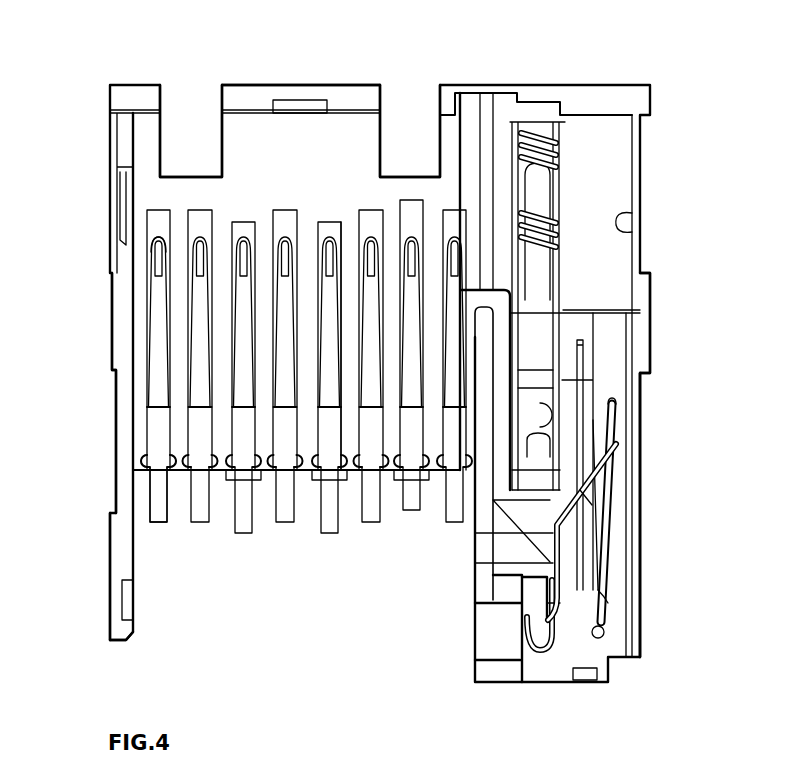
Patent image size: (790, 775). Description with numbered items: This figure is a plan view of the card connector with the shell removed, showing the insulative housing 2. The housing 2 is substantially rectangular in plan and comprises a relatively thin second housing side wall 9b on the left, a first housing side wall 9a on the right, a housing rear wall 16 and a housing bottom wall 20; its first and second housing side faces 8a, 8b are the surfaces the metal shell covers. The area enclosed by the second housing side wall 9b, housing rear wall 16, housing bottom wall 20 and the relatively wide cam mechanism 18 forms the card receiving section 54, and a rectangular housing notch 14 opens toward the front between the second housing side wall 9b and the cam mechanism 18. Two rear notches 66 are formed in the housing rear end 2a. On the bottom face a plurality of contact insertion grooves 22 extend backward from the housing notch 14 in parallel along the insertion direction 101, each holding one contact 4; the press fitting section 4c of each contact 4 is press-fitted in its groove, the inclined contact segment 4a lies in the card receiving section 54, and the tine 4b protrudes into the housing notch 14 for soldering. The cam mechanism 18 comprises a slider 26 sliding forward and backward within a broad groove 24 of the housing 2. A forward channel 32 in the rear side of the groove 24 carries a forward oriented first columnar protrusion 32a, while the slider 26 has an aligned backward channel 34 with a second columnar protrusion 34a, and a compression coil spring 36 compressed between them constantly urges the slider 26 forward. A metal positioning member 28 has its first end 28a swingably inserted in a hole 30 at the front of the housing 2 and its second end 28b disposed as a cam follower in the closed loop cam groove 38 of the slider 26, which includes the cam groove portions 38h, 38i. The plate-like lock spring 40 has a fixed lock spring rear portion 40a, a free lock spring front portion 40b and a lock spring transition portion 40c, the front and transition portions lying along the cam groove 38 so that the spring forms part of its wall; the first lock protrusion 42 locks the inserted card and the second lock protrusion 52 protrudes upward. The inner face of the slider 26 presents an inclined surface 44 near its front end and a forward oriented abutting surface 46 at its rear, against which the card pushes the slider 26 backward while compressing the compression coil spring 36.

The housing 2 is at (355, 135).
The housing rear end 2a is at (237, 85).
The contact 4 is at (146, 388).
The contact segment 4a is at (160, 290).
The tine 4b is at (156, 514).
The press fitting section 4c is at (150, 437).
The first housing side face 8a is at (643, 407).
The second housing side face 8b is at (113, 468).
The first housing side wall 9a is at (633, 490).
The second housing side wall 9b is at (120, 357).
The housing notch 14 is at (475, 615).
The housing rear wall 16 is at (350, 97).
The cam mechanism 18 is at (586, 304).
The housing bottom wall 20 is at (257, 123).
The contact insertion groove 22 is at (290, 210).
The groove 24 is at (627, 215).
The slider 26 is at (580, 323).
The positioning member 28 is at (567, 597).
The first end 28a is at (604, 638).
The second end 28b is at (613, 402).
The hole 30 is at (594, 681).
The forward channel 32 is at (540, 190).
The first columnar protrusion 32a is at (540, 130).
The backward channel 34 is at (598, 408).
The second columnar protrusion 34a is at (506, 462).
The compression coil spring 36 is at (540, 218).
The cam groove 38 is at (571, 523).
The spring wire hook 38h is at (604, 598).
The spring wire arm 38i is at (586, 496).
The lock spring 40 is at (534, 660).
The lock spring rear portion 40a is at (580, 368).
The lock spring front portion 40b is at (547, 603).
The lock spring transition portion 40c is at (520, 478).
The first lock protrusion 42 is at (522, 633).
The inclined surface 44 is at (515, 492).
The abutting surface 46 is at (440, 253).
The second lock protrusion 52 is at (547, 565).
The card receiving section 54 is at (350, 400).
The rear notches 66 is at (220, 138).
The insertion direction 101 is at (310, 636).